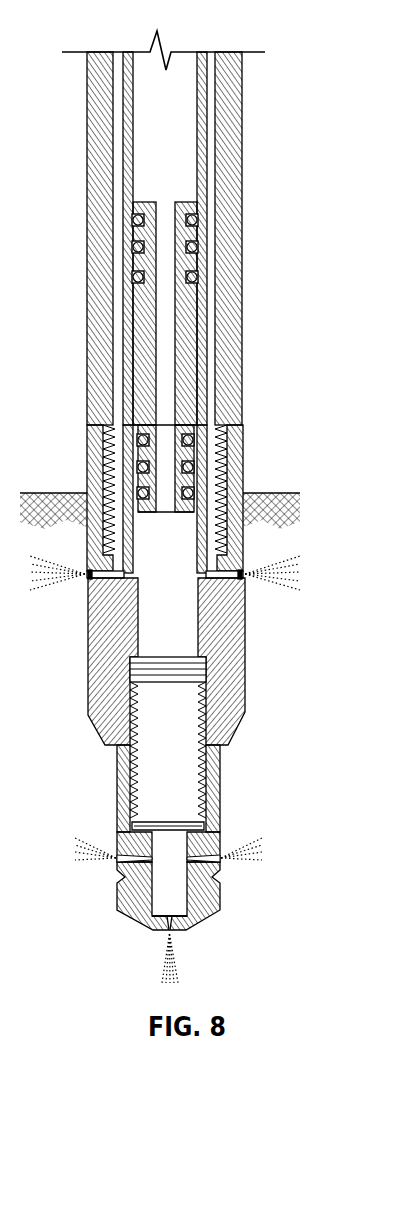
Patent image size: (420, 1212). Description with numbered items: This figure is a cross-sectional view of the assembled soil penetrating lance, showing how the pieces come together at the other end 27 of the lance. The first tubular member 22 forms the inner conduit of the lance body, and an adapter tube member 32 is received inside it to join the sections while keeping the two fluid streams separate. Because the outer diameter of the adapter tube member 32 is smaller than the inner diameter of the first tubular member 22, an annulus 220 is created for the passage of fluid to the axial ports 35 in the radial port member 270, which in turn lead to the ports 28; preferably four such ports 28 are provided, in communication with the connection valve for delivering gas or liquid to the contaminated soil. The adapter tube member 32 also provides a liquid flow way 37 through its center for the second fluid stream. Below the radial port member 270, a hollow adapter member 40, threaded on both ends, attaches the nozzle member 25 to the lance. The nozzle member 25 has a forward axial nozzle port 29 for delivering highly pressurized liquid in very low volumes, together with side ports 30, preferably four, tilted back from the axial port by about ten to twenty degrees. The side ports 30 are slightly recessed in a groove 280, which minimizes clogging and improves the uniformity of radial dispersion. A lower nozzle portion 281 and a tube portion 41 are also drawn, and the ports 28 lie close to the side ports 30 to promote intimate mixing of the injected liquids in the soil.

The first tubular member 22 is at (196, 141).
The liquid flow way 37 is at (170, 202).
The adapter tube member 32 is at (215, 325).
The annulus 220 is at (210, 353).
The axial ports 35 is at (207, 425).
The other end 27 is at (88, 432).
The ports 28 is at (87, 575).
The radial port member 270 is at (88, 670).
The adapter member 40 is at (203, 717).
The nozzle tube 41 is at (117, 752).
The nozzle member 25 is at (220, 812).
The groove 280 is at (221, 845).
The side ports 30 is at (116, 859).
The nozzle head lower portion 281 is at (217, 882).
The forward axial nozzle port 29 is at (168, 931).